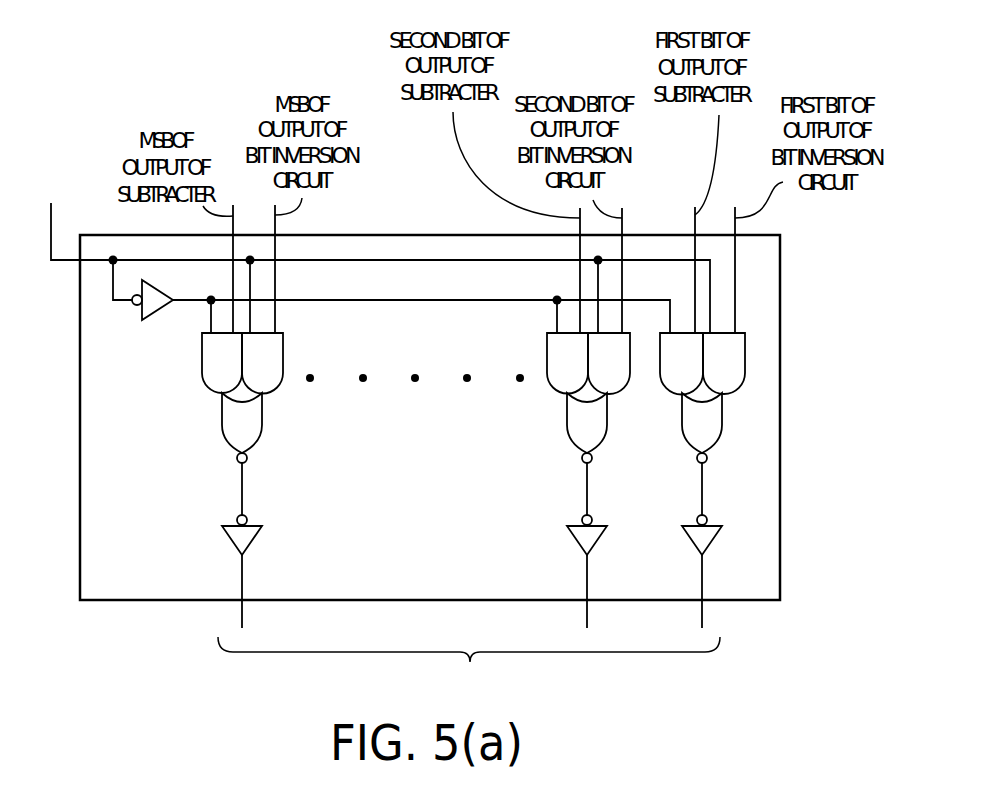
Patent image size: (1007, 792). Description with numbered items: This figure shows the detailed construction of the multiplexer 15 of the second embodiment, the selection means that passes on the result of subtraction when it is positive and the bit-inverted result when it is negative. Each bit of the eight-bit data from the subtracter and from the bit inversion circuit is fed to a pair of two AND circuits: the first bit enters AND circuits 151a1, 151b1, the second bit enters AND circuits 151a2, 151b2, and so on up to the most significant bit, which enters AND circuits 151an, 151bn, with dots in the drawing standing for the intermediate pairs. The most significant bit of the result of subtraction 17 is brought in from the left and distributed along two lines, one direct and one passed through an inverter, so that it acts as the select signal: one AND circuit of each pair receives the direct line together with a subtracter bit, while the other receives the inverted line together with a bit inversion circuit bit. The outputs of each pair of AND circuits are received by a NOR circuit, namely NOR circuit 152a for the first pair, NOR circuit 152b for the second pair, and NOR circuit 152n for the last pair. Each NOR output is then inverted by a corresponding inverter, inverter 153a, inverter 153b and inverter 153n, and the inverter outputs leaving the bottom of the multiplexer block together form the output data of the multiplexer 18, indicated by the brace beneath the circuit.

The multiplexer 15 is at (117, 600).
The most significant bit of the result of subtraction 17 is at (51, 218).
The output data of the multiplexer 18 is at (469, 666).
The AND circuit 151bn is at (202, 374).
The AND circuit 151an is at (282, 385).
The AND circuit 151b2 is at (547, 384).
The AND circuit 151a2 is at (615, 393).
The AND circuit 151b1 is at (665, 392).
The AND circuit 151a1 is at (735, 393).
The NOR circuit 152n is at (263, 427).
The NOR circuit 152b is at (567, 433).
The NOR circuit 152a is at (690, 445).
The inverter 153n is at (255, 538).
The inverter 153b is at (600, 537).
The inverter 153a is at (716, 532).